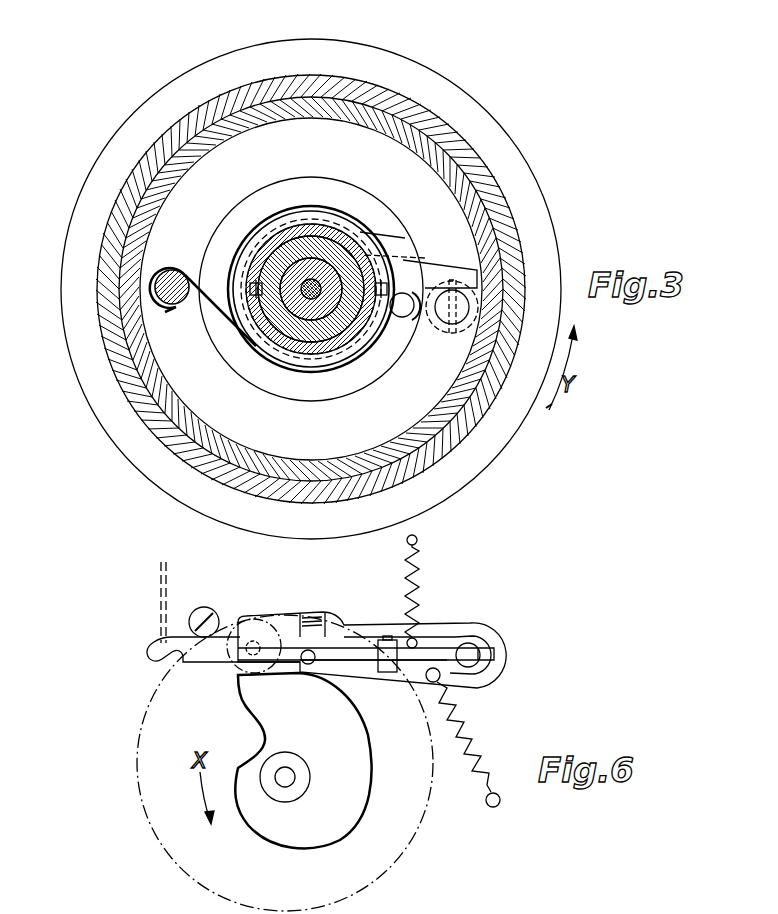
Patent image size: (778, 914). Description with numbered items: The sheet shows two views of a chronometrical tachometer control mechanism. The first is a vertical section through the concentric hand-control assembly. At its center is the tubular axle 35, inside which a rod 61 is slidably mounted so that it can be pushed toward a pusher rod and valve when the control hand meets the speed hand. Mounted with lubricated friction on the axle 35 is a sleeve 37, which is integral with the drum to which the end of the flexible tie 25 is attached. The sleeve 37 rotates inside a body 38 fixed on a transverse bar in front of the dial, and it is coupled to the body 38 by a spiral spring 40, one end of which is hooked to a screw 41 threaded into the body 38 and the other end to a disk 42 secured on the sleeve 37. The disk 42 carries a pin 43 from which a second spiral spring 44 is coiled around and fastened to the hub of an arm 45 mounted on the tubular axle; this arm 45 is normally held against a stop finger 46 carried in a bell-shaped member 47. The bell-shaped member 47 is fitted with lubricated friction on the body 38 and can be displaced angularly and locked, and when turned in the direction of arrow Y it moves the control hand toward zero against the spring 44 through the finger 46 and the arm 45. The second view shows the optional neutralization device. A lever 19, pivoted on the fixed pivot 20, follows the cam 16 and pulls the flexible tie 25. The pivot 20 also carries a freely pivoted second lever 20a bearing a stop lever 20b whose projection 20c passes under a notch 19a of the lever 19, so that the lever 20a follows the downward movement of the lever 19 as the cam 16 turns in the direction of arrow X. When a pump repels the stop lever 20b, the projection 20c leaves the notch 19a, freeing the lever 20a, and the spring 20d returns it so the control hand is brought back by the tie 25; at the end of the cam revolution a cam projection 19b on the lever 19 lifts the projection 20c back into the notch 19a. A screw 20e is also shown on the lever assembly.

In FIG. 6, the cam 16 is at (260, 822).
In FIG. 6, the lever 19 is at (375, 624).
In FIG. 6, the notch 19a is at (341, 676).
In FIG. 6, the cam projection 19b is at (315, 612).
In FIG. 6, the pivot 20 is at (479, 646).
In FIG. 6, the second lever 20a is at (178, 644).
In FIG. 6, the stop lever 20b is at (449, 652).
In FIG. 6, the projection 20c is at (309, 665).
In FIG. 6, the spring 20d is at (416, 612).
In FIG. 6, the screw 20e is at (203, 607).
In FIG. 6, the flexible tie 25 is at (160, 617).
In FIG. 3, the axle 35 is at (330, 312).
In FIG. 3, the sleeve 37 is at (285, 335).
In FIG. 3, the body 38 is at (452, 428).
In FIG. 3, the spiral spring 40 is at (232, 324).
In FIG. 3, the screw 41 is at (156, 289).
In FIG. 3, the disk 42 is at (362, 232).
In FIG. 3, the pin 43 is at (399, 312).
In FIG. 3, the spiral spring 44 is at (252, 243).
In FIG. 3, the arm 45 is at (479, 268).
In FIG. 3, the stop finger 46 is at (470, 365).
In FIG. 3, the bell-shaped member 47 is at (120, 220).
In FIG. 3, the rod 61 is at (313, 298).